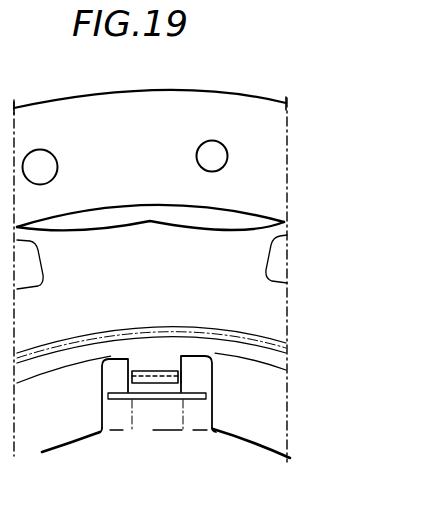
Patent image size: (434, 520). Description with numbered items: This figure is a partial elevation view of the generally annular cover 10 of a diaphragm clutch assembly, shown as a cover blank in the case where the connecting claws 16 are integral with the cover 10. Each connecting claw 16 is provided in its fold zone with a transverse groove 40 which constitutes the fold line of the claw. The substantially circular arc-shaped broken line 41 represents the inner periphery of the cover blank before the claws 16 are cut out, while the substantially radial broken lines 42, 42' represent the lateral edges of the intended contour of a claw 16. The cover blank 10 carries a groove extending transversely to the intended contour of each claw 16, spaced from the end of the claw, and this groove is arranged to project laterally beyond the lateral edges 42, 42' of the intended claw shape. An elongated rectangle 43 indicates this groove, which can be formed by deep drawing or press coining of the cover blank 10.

The cover 10 is at (208, 90).
The connecting claw 16 is at (130, 378).
The transverse groove 40 is at (157, 376).
The circular arc-shaped broken line 41 is at (122, 430).
The radial broken line 42 is at (157, 435).
The radial broken line 42' is at (190, 439).
The elongated rectangle 43 is at (195, 390).